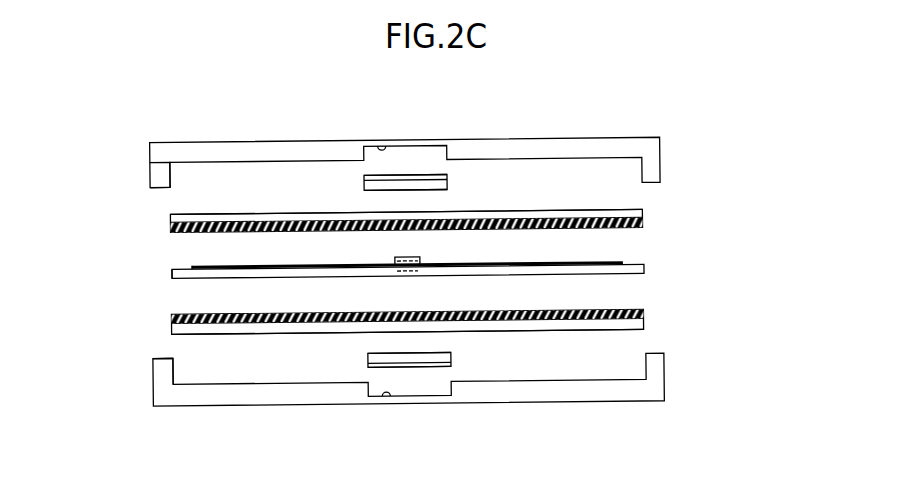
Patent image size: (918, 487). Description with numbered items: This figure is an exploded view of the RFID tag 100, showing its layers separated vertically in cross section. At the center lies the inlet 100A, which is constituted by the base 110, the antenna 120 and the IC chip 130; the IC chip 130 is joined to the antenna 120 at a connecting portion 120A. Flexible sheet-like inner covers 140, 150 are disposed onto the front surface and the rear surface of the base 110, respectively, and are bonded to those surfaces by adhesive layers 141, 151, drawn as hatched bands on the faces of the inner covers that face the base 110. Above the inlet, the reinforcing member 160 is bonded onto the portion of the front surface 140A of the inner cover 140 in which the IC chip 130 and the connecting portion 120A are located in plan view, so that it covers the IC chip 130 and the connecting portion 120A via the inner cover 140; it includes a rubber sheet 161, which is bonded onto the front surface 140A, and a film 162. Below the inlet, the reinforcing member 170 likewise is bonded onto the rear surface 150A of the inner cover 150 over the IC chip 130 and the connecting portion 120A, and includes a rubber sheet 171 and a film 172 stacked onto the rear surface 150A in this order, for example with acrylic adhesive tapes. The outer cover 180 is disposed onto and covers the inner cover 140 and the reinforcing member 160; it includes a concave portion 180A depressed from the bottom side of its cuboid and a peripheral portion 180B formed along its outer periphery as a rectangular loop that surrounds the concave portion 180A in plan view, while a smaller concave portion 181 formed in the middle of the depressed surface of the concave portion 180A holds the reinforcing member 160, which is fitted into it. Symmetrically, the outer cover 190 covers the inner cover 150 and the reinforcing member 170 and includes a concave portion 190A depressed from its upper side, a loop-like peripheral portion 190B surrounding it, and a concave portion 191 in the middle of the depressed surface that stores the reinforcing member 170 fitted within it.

The RFID tag 100 is at (740, 94).
The inlet 100A is at (158, 267).
The base 110 is at (644, 272).
The antenna 120 is at (622, 264).
The connecting portion 120A is at (418, 282).
The IC chip 130 is at (415, 257).
The inner cover 140 is at (643, 216).
The front surface of inner cover 140A is at (545, 213).
The adhesive layer 141 is at (643, 226).
The inner cover 150 is at (643, 328).
The rear surface of inner cover 150A is at (545, 332).
The adhesive layer 151 is at (643, 316).
The reinforcing member 160 is at (510, 89).
The rubber sheet 161 is at (449, 185).
The film 162 is at (449, 177).
The reinforcing member 170 is at (512, 407).
The rubber sheet 171 is at (450, 358).
The film 172 is at (450, 365).
The outer cover 180 is at (621, 151).
The concave portion 180A is at (200, 172).
The peripheral portion 180B is at (158, 185).
The concave portion 181 is at (382, 147).
The outer cover 190 is at (622, 393).
The concave portion 190A is at (200, 371).
The peripheral portion 190B is at (158, 356).
The concave portion 191 is at (384, 394).